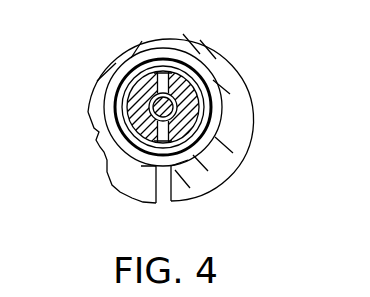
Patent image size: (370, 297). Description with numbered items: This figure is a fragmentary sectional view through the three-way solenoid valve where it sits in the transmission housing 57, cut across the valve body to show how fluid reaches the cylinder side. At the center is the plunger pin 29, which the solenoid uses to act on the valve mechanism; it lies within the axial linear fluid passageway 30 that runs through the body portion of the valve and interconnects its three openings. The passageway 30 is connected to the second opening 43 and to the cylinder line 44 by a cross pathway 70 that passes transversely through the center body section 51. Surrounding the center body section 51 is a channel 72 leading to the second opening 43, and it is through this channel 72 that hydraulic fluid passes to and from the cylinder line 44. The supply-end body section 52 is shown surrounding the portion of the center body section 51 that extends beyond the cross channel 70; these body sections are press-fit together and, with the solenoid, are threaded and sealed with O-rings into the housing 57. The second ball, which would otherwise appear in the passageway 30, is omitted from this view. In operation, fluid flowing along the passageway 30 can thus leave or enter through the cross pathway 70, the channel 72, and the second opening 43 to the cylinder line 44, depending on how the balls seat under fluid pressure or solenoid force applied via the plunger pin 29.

The plunger pin 29 is at (195, 77).
The axial linear fluid passageway 30 is at (177, 107).
The second opening 43 is at (176, 174).
The cylinder line 44 is at (153, 200).
The center section 51 is at (163, 73).
The supply-end section 52 is at (207, 118).
The transmission housing 57 is at (113, 63).
The cross pathway 70 is at (178, 148).
The channel 72 is at (115, 132).